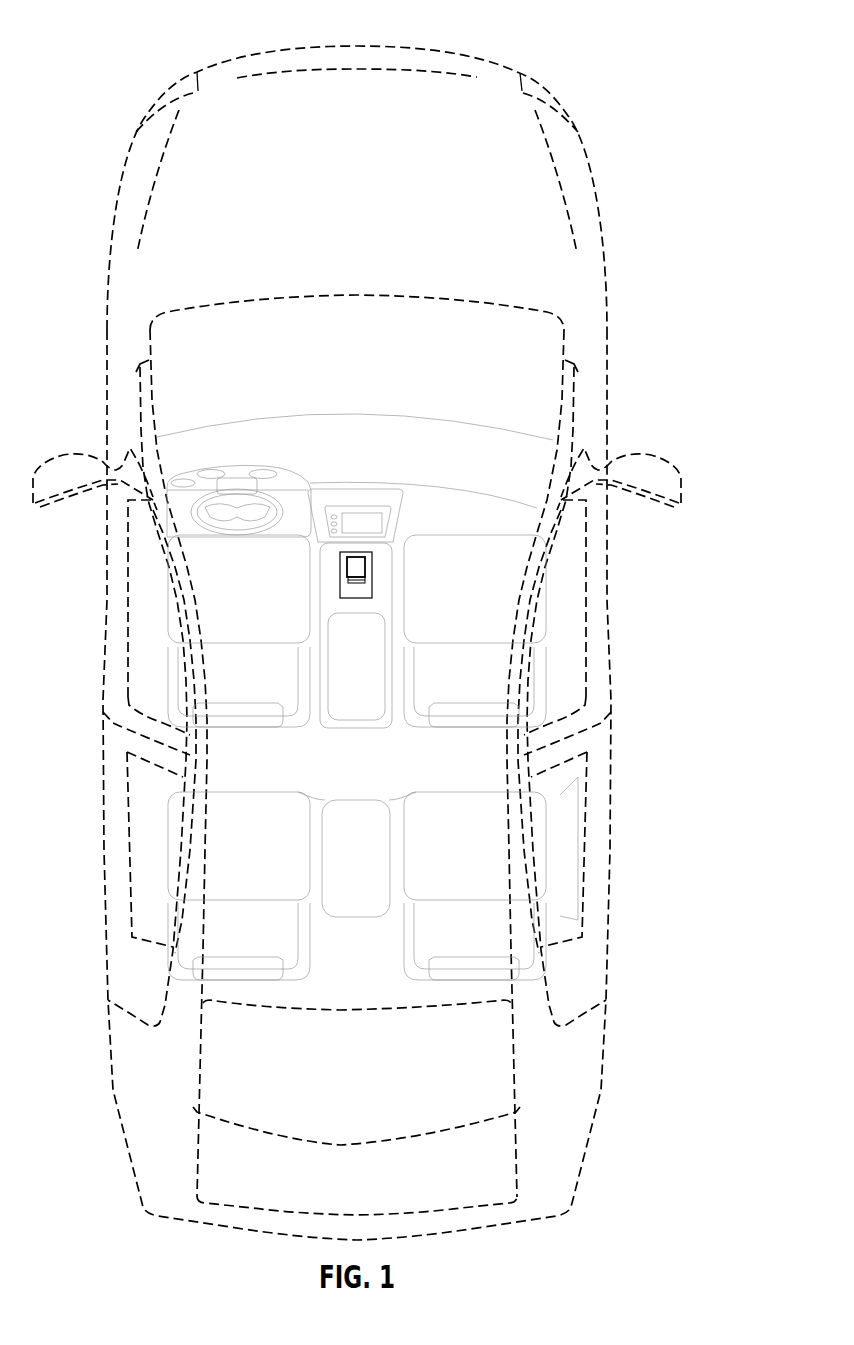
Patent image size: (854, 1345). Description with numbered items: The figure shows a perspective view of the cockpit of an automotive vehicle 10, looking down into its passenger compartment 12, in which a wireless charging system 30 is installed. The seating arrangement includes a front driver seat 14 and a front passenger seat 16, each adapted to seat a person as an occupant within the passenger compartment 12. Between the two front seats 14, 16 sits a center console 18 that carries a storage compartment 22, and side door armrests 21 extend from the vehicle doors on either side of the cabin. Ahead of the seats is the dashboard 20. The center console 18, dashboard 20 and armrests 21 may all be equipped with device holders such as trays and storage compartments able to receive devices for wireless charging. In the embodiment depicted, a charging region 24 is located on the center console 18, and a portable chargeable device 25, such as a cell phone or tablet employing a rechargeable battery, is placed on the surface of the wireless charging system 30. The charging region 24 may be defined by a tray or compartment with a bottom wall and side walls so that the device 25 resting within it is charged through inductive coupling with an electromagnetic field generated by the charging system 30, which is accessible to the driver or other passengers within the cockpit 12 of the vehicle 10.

The vehicle 10 is at (566, 52).
The passenger compartment 12 is at (497, 510).
The front driver seat 14 is at (232, 614).
The front passenger seat 16 is at (462, 614).
The center console 18 is at (365, 730).
The dashboard 20 is at (479, 495).
The side door armrests 21 is at (140, 647).
The storage compartment 22 is at (347, 684).
The charging region 24 is at (378, 563).
The portable chargeable device 25 is at (354, 567).
The wireless charging system 30 is at (388, 571).